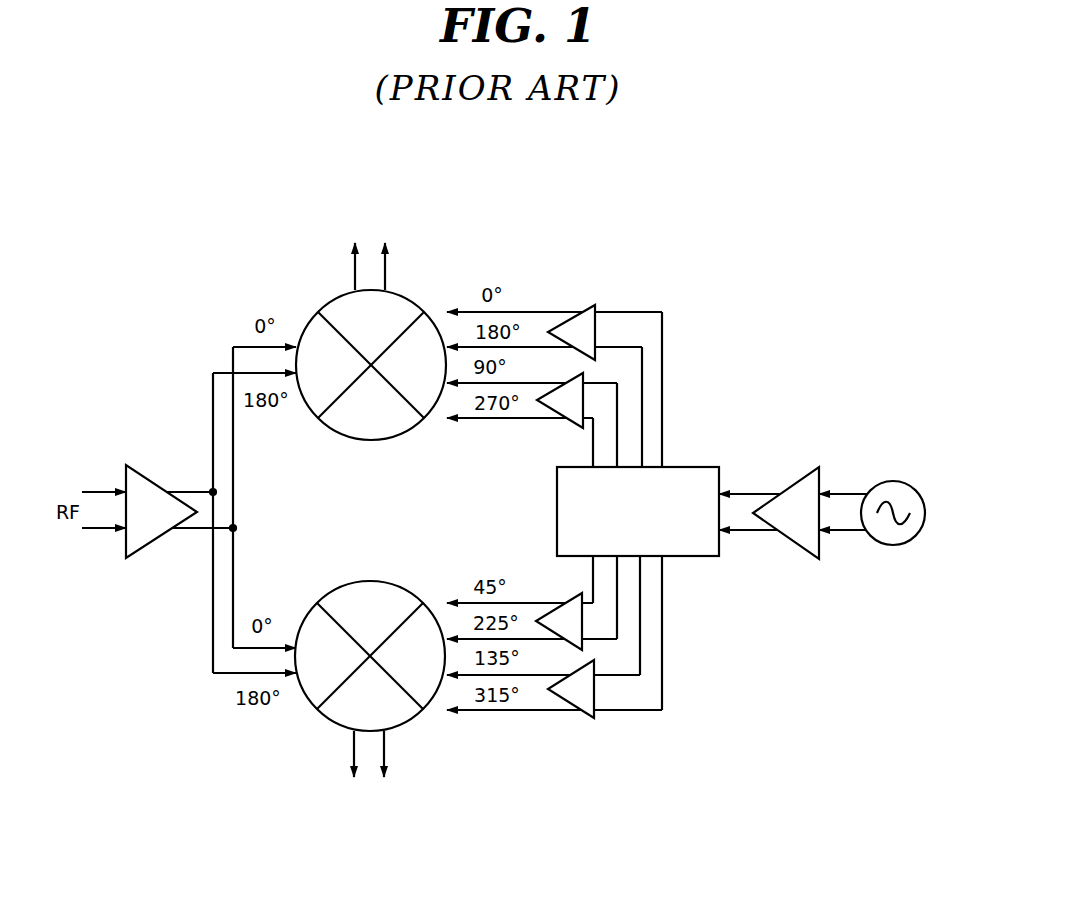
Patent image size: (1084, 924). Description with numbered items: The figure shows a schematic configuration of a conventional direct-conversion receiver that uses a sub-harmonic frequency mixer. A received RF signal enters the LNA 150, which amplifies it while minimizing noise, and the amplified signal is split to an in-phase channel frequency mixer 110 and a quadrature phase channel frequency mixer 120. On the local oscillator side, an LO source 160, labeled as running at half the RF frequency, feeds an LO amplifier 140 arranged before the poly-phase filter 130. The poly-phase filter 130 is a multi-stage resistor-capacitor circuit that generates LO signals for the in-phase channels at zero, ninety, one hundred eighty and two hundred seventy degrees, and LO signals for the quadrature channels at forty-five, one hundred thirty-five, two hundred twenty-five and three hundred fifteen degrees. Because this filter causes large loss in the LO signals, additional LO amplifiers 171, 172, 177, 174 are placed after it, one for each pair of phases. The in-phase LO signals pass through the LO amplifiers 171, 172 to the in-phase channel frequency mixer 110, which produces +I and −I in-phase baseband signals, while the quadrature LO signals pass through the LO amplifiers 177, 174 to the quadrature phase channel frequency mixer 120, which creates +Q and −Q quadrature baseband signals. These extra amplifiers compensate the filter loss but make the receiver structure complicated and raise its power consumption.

The in-phase channel frequency mixer 110 is at (322, 312).
The quadrature phase channel frequency mixer 120 is at (333, 596).
The poly-phase filter 130 is at (700, 467).
The LO amplifier 140 is at (792, 545).
The LNA 150 is at (156, 470).
The local oscillator source 160 is at (893, 545).
The LO amplifier 171 is at (591, 305).
The LO amplifier 172 is at (568, 428).
The LO amplifier 177 is at (570, 596).
The LO amplifier 174 is at (586, 718).